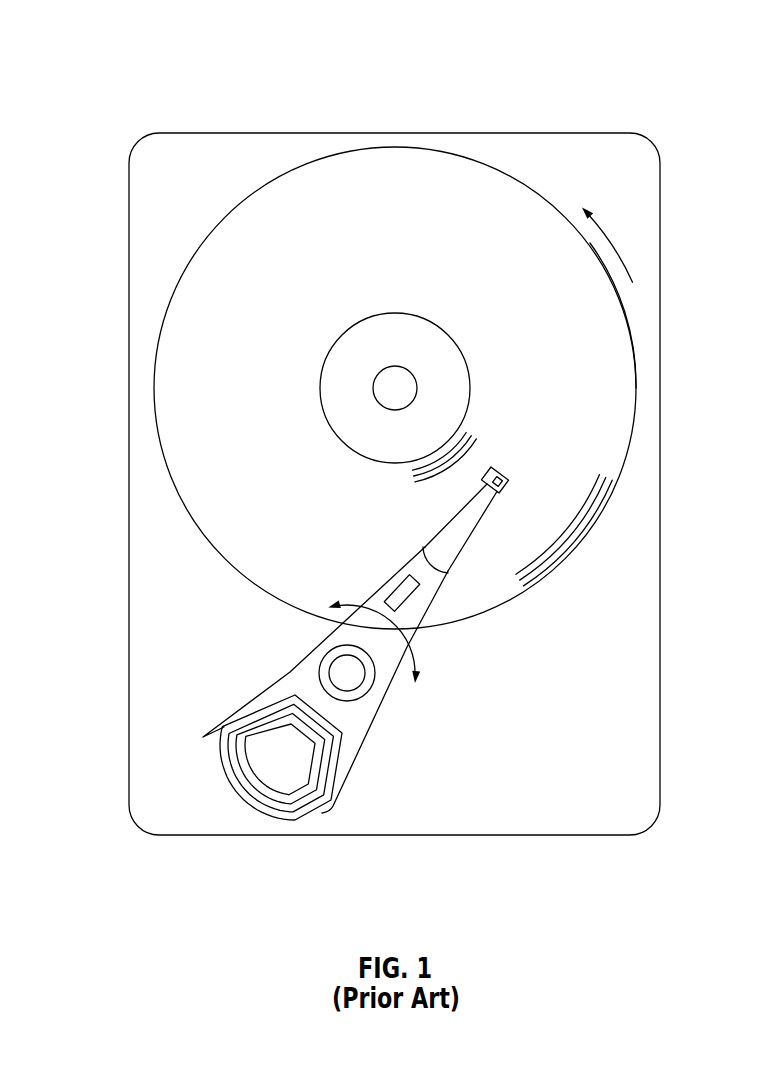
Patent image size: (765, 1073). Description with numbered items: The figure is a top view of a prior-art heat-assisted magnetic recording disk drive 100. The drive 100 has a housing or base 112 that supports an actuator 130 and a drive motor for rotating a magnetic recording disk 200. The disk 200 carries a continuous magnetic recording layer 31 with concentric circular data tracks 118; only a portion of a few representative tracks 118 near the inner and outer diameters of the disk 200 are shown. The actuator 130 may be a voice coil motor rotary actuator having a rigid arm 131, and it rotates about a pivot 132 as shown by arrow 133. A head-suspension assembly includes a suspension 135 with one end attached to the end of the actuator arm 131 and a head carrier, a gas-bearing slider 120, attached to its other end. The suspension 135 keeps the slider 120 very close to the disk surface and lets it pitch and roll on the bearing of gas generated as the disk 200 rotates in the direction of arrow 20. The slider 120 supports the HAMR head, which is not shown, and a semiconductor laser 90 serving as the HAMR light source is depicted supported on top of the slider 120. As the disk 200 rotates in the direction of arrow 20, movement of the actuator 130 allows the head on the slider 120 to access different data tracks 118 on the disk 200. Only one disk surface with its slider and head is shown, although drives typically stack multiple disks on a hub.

The HAMR disk drive 100 is at (128, 59).
The housing or base 112 is at (593, 133).
The disk 200 is at (268, 183).
The continuous magnetic recording layer 31 is at (617, 356).
The arrow 20 is at (606, 228).
The data tracks 118 is at (400, 464).
The gas-bearing slider 120 is at (502, 490).
The semiconductor laser 90 is at (508, 478).
The suspension 135 is at (435, 542).
The rigid arm 131 is at (382, 587).
The pivot 132 is at (332, 668).
The arrow 133 is at (430, 656).
The actuator 130 is at (207, 725).